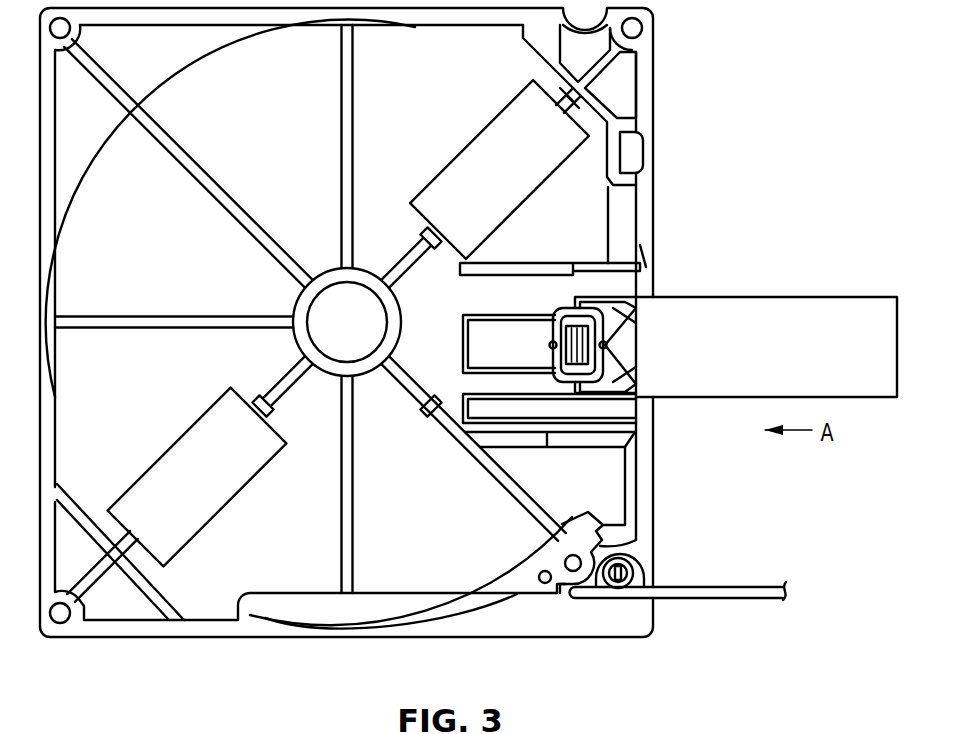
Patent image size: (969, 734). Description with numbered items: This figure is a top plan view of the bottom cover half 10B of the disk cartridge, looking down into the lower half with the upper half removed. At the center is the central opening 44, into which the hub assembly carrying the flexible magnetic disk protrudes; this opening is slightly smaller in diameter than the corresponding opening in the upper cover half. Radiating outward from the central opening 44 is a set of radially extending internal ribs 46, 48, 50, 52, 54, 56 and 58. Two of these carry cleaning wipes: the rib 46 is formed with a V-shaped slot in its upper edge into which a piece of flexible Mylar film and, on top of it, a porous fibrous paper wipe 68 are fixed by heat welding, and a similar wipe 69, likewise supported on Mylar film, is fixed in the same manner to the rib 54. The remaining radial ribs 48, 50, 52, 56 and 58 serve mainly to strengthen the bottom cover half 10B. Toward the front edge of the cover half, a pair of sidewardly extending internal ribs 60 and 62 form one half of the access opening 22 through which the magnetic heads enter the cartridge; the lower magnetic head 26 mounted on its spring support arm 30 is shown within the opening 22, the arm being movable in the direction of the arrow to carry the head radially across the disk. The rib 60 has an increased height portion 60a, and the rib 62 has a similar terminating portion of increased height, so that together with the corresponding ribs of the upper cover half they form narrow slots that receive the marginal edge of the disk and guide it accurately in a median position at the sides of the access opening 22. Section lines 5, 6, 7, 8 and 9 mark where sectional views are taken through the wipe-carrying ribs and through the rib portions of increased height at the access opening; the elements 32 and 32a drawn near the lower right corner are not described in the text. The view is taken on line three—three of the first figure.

The bottom cover half 10B is at (657, 512).
The access opening 22 is at (634, 428).
The lower magnetic head 26 is at (565, 333).
The spring support arm 30 is at (730, 349).
The latch bar 32 is at (735, 598).
The latch pivot 32a is at (587, 600).
The central opening 44 is at (335, 285).
The radial rib 46 is at (418, 262).
The radial rib 48 is at (342, 176).
The radial rib 50 is at (243, 222).
The radial rib 52 is at (145, 328).
The radial rib 54 is at (288, 388).
The radial rib 56 is at (342, 521).
The radial rib 58 is at (512, 499).
The sidewardly extending internal rib 60 is at (525, 448).
The increased height portion 60a is at (594, 450).
The sidewardly extending internal rib 62 is at (458, 306).
The paper wipe 68 is at (418, 193).
The wipe 69 is at (127, 490).
The section line 5- 5 is at (597, 187).
The section line 6- 6 is at (545, 240).
The section line 7- 7 is at (180, 170).
The section line 8- 8 is at (707, 267).
The section line 9- 9 is at (730, 240).